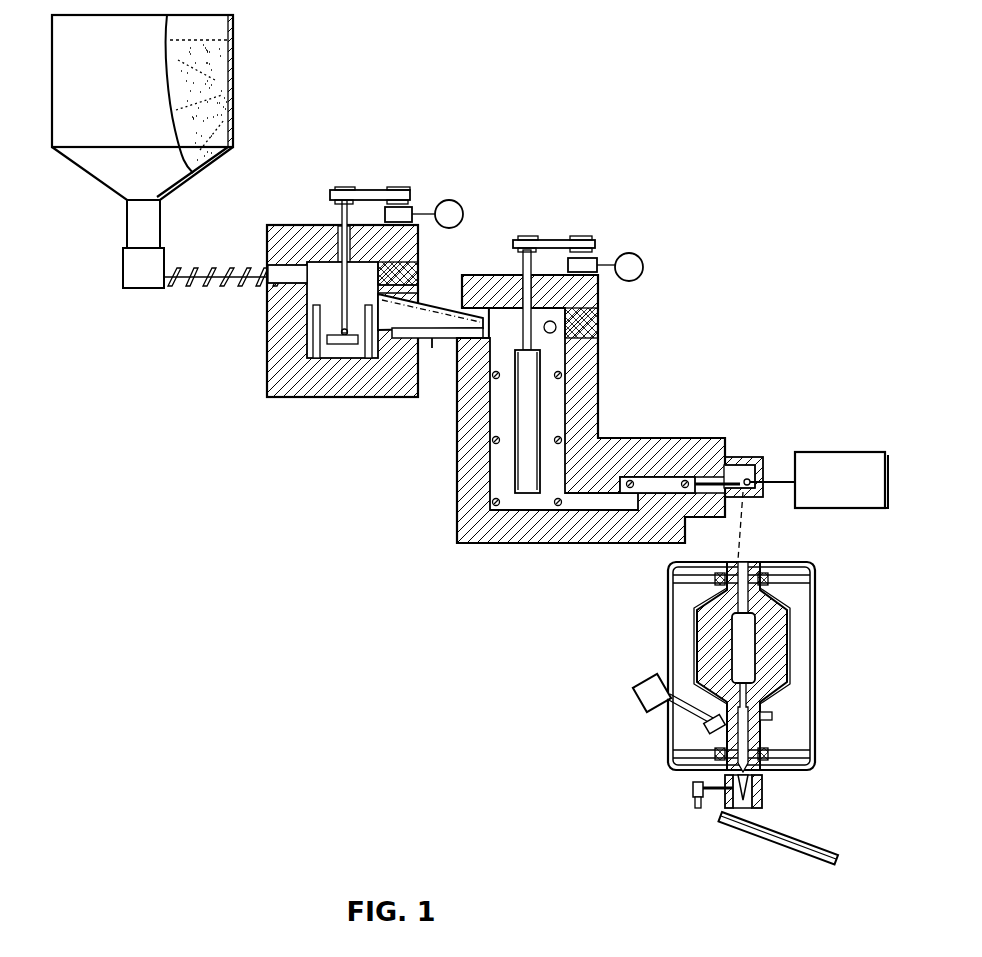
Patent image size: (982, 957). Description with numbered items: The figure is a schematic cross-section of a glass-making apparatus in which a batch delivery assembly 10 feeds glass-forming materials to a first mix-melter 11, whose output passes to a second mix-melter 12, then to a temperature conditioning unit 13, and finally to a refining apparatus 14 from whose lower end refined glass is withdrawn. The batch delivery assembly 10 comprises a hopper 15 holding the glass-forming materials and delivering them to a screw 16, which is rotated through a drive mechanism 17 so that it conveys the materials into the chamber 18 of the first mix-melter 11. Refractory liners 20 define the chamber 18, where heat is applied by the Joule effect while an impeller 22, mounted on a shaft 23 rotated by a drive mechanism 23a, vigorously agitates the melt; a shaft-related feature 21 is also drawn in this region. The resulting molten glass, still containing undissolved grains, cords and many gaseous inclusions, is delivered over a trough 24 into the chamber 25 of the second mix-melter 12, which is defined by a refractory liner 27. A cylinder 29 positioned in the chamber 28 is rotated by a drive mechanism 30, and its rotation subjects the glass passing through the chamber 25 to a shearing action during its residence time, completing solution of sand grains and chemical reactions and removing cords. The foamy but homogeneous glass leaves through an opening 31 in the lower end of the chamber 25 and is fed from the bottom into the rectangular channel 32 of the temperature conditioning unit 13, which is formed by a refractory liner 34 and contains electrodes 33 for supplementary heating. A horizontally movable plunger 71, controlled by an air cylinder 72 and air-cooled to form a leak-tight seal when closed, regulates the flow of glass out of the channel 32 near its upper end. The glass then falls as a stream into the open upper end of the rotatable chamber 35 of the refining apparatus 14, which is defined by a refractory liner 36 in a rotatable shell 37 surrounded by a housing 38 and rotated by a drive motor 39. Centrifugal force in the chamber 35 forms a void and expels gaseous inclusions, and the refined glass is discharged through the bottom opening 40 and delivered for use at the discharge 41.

The batch delivery assembly 10 is at (247, 97).
The first mix-melter 11 is at (380, 172).
The second mix-melter 12 is at (577, 220).
The temperature conditioning unit 13 is at (682, 420).
The refining apparatus 14 is at (660, 632).
The hopper 15 is at (236, 60).
The screw 16 is at (196, 268).
The drive mechanism 17 is at (151, 282).
The chamber 18 is at (306, 298).
The refractory liners 20 is at (302, 390).
The shaft 21 is at (320, 333).
The impeller 22 is at (347, 345).
The shaft 23 is at (338, 211).
The drive mechanism 23a is at (408, 201).
The trough 24 is at (440, 306).
The chamber 25 is at (460, 481).
The refractory liner 27 is at (460, 433).
The chamber 28 is at (460, 517).
The cylinder 29 is at (541, 401).
The drive mechanism 30 is at (592, 241).
The opening 31 is at (577, 511).
The channel 32 is at (659, 477).
The electrodes 33 is at (631, 480).
The refractory liner 34 is at (706, 438).
The rotatable chamber 35 is at (749, 658).
The refractory liner 36 is at (776, 619).
The rotatable shell 37 is at (790, 630).
The housing 38 is at (669, 673).
The drive motor 39 is at (645, 706).
The bottom opening 40 is at (764, 797).
The discharge 41 is at (780, 838).
The plunger 71 is at (741, 478).
The air cylinder 72 is at (833, 451).